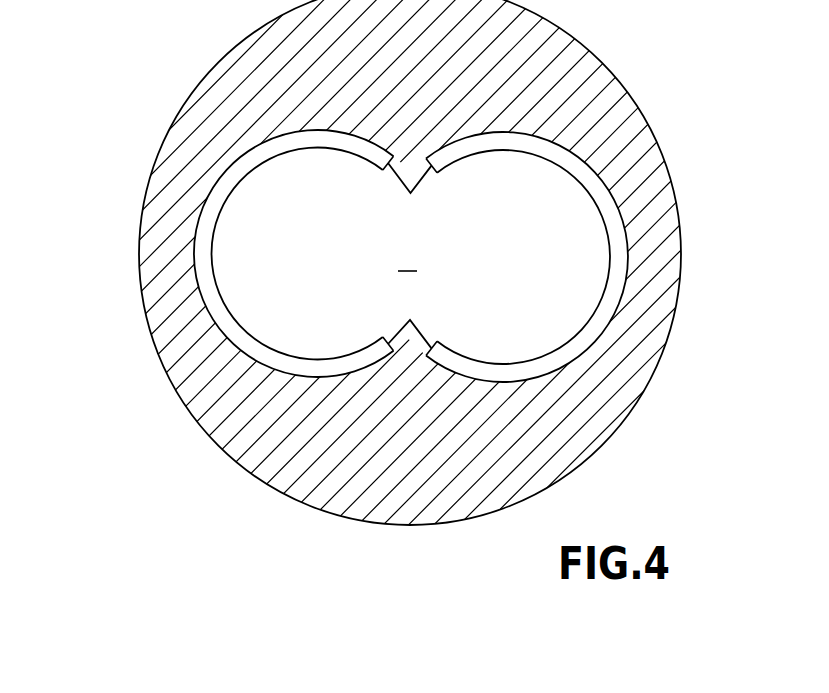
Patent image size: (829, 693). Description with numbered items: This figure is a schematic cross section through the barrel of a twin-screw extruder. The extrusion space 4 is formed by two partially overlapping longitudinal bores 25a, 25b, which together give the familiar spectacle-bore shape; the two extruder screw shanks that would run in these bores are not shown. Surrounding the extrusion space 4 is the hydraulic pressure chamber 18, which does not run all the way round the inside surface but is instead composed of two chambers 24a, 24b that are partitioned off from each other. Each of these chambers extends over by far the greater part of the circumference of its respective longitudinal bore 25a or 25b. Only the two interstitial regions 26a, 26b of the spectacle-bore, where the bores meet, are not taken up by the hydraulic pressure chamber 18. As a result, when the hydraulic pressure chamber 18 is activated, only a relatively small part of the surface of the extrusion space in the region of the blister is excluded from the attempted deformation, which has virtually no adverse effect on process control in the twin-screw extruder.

The hydraulic pressure chamber 18 is at (463, 373).
The chamber 24a is at (218, 187).
The chamber 24b is at (617, 305).
The longitudinal bore 25a is at (270, 292).
The longitudinal bore 25b is at (540, 218).
The interstitial region 26a is at (405, 194).
The interstitial region 26b is at (428, 340).
The extrusion space 4 is at (407, 258).